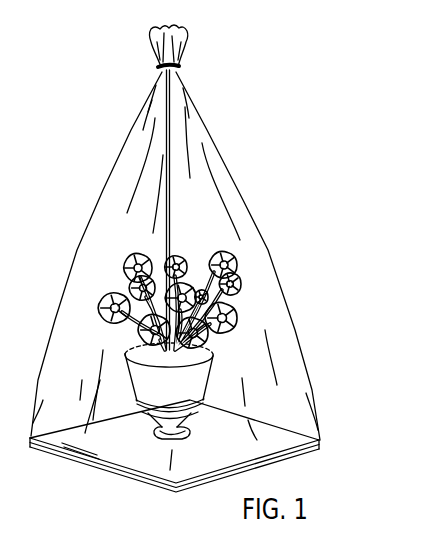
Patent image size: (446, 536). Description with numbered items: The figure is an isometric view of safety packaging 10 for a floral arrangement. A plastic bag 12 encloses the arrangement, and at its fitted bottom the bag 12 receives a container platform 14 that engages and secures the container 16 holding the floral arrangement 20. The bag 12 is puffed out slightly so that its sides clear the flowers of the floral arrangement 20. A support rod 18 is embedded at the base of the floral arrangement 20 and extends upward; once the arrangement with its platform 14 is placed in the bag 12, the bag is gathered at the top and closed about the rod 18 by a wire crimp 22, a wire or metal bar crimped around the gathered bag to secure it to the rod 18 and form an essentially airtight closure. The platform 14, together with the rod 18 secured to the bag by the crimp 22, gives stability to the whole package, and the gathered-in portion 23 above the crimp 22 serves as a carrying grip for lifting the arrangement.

The safety packaging 10 is at (318, 270).
The plastic bag 12 is at (114, 161).
The container platform 14 is at (63, 446).
The container 16 is at (190, 380).
The support rod 18 is at (168, 161).
The floral arrangement 20 is at (232, 270).
The wire crimp 22 is at (185, 64).
The gathered-in portion 23 is at (150, 65).